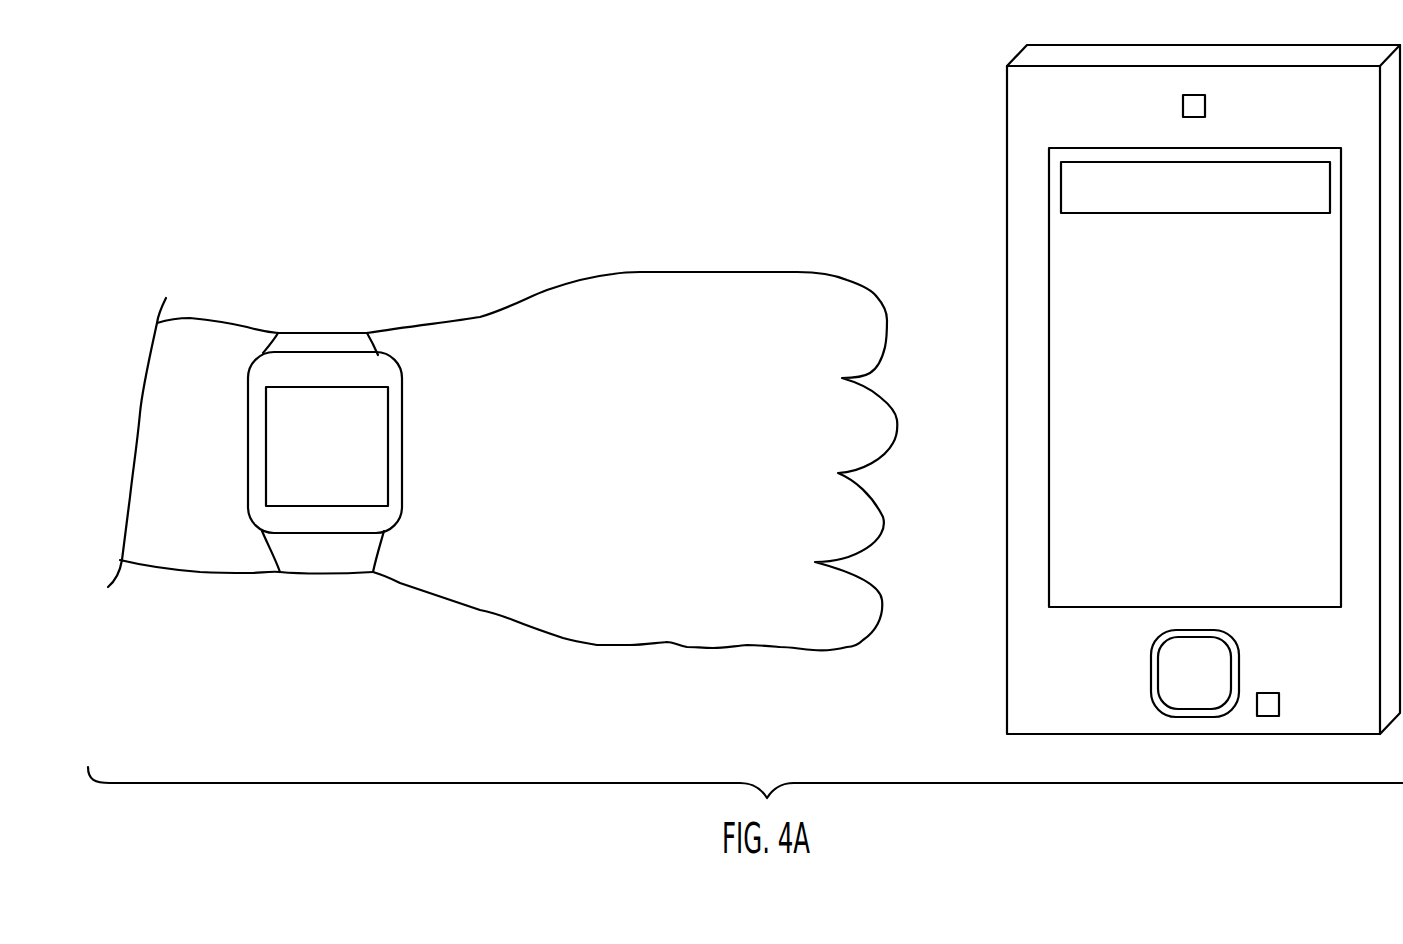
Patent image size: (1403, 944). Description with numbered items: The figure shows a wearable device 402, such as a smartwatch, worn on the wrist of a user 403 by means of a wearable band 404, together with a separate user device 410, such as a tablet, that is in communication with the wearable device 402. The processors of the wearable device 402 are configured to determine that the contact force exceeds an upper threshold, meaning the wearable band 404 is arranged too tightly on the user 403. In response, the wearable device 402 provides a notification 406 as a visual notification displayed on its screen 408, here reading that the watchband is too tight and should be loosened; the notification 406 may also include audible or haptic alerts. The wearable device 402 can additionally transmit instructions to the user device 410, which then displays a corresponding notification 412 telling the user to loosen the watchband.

The wearable device 402 is at (349, 394).
The user 403 is at (675, 270).
The wearable band 404 is at (347, 333).
The notification 406 is at (367, 463).
The screen 408 is at (380, 383).
The user device 410 is at (1144, 389).
The notification 412 is at (1061, 190).